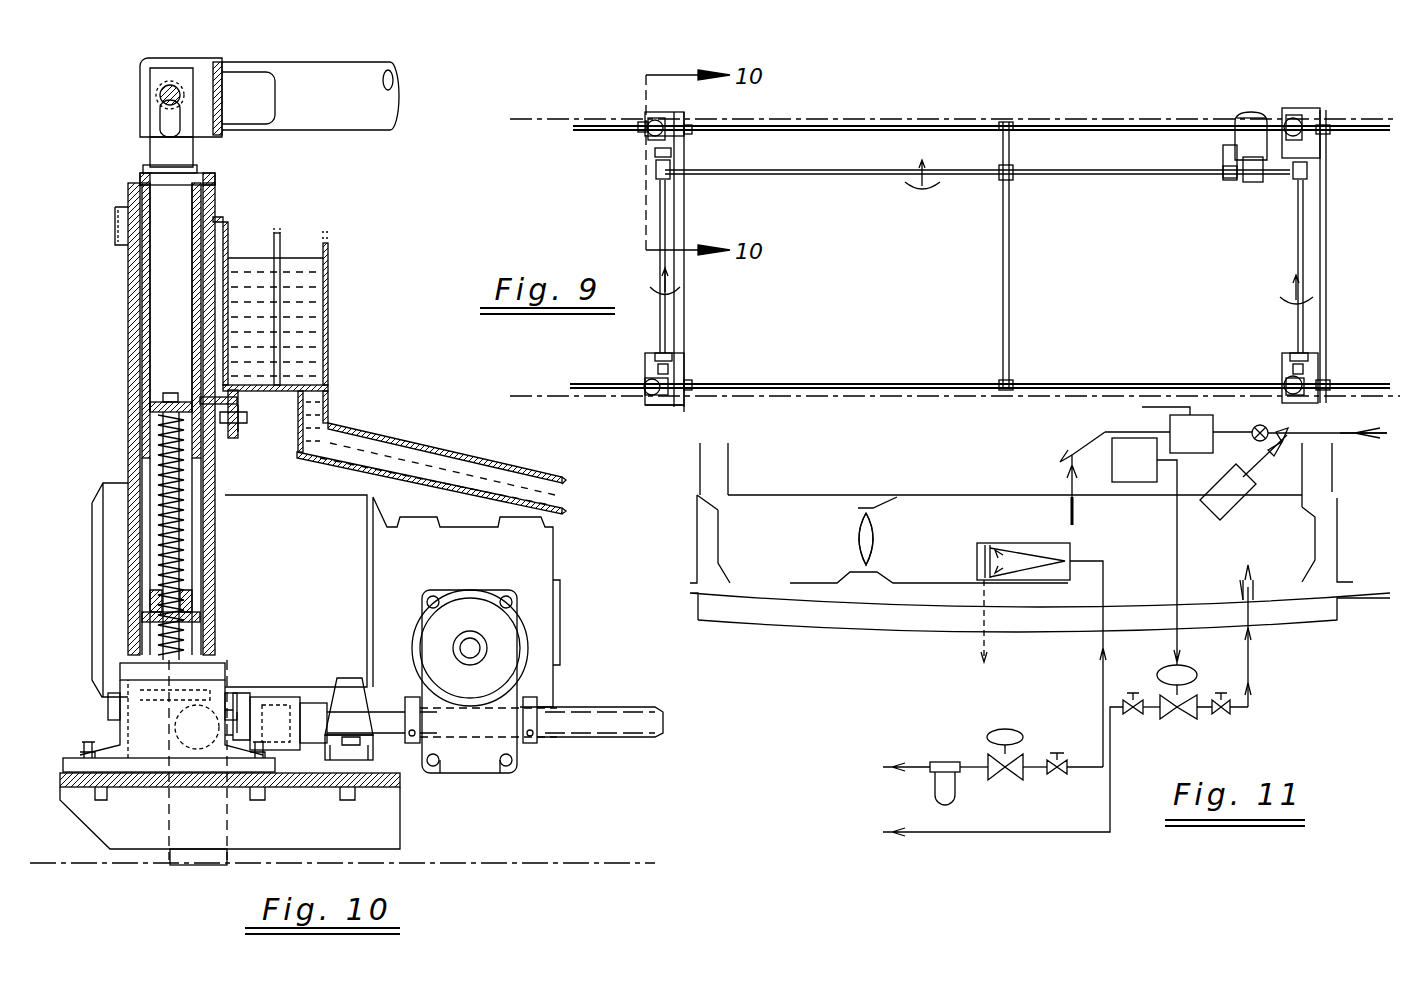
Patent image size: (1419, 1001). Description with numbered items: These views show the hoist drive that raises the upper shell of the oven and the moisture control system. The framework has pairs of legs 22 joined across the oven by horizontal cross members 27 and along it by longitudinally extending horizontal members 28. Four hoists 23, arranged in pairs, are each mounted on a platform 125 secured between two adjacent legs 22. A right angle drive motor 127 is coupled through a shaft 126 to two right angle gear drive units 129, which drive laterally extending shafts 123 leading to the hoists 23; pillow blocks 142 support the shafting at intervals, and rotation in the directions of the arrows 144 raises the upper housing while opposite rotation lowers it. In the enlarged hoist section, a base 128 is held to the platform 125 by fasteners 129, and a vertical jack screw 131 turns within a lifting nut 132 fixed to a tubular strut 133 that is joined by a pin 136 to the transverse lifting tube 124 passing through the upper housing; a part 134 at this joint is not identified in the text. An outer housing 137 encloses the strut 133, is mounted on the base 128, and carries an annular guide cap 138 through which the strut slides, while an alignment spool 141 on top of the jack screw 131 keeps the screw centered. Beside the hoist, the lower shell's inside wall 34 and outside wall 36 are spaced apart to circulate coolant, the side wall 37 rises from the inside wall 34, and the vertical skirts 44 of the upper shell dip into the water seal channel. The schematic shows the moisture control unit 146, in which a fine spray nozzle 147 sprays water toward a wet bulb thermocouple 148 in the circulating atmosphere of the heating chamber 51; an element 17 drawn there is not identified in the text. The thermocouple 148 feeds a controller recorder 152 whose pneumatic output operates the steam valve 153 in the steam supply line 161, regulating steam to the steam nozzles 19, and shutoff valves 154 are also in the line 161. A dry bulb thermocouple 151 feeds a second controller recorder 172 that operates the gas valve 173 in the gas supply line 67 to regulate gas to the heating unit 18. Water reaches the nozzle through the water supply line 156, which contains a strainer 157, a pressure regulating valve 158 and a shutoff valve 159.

In FIG. 11, the fan 17 is at (856, 543).
In FIG. 11, the heating unit 18 is at (1250, 485).
In FIG. 11, the steam nozzles 19 is at (1252, 585).
In FIG. 10, the legs 22 is at (172, 858).
In FIG. 9, the legs 22 is at (689, 135).
In FIG. 10, the hoists 23 is at (97, 235).
In FIG. 9, the hoists 23 is at (648, 135).
In FIG. 9, the cross members 27 is at (686, 225).
In FIG. 9, the longitudinally extending horizontal members 28 is at (818, 132).
In FIG. 10, the inside wall 34 is at (400, 437).
In FIG. 10, the outside wall 36 is at (335, 456).
In FIG. 10, the side walls 37 is at (330, 250).
In FIG. 10, the vertical skirts 44 is at (276, 232).
In FIG. 11, the heating chamber 51 is at (912, 552).
In FIG. 11, the gas supply line 67 is at (1350, 440).
In FIG. 10, the laterally extending shafts 123 is at (608, 712).
In FIG. 9, the laterally extending shafts 123 is at (660, 205).
In FIG. 10, the lifting tube 124 is at (350, 108).
In FIG. 10, the platform 125 is at (395, 822).
In FIG. 9, the platform 125 is at (686, 410).
In FIG. 10, the shaft 126 is at (487, 648).
In FIG. 9, the shaft 126 is at (1005, 170).
In FIG. 10, the right angle drive motor 127 is at (270, 592).
In FIG. 9, the right angle drive motor 127 is at (1245, 140).
In FIG. 10, the base 128 is at (130, 727).
In FIG. 10, the right angle gear drive unit 129 is at (480, 620).
In FIG. 9, the right angle gear drive unit 129 is at (655, 170).
In FIG. 10, the jack screw 131 is at (165, 527).
In FIG. 10, the lifting nut 132 is at (150, 617).
In FIG. 10, the tubular strut 133 is at (143, 345).
In FIG. 10, the bracket 134 is at (158, 150).
In FIG. 10, the pin 136 is at (160, 97).
In FIG. 10, the outer housing 137 is at (130, 302).
In FIG. 10, the annular guide cap 138 is at (205, 183).
In FIG. 10, the alignment spool 141 is at (152, 418).
In FIG. 10, the pillow blocks 142 is at (350, 680).
In FIG. 9, the pillow blocks 142 is at (655, 152).
In FIG. 9, the arrows 144 is at (922, 185).
In FIG. 11, the moisture control unit 146 is at (1115, 455).
In FIG. 11, the fine spray nozzle 147 is at (1068, 560).
In FIG. 11, the wet bulb thermocouple 148 is at (998, 552).
In FIG. 11, the dry bulb thermocouple 151 is at (1078, 510).
In FIG. 11, the controller recorder 152 is at (1158, 468).
In FIG. 11, the pneumatically operated steam valve 153 is at (1185, 705).
In FIG. 11, the shutoff valves 154 is at (1135, 718).
In FIG. 11, the water supply line 156 is at (918, 765).
In FIG. 11, the strainer 157 is at (935, 790).
In FIG. 11, the pressure regulating valve 158 is at (1006, 730).
In FIG. 11, the shutoff valve 159 is at (1057, 776).
In FIG. 11, the steam supply line 161 is at (1050, 834).
In FIG. 11, the controller recorder 172 is at (1159, 424).
In FIG. 11, the pneumatically operated gas valve 173 is at (1278, 440).